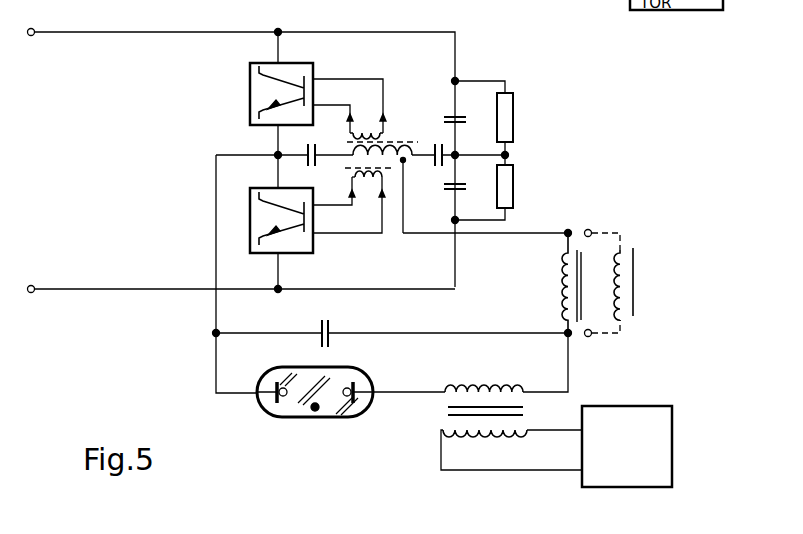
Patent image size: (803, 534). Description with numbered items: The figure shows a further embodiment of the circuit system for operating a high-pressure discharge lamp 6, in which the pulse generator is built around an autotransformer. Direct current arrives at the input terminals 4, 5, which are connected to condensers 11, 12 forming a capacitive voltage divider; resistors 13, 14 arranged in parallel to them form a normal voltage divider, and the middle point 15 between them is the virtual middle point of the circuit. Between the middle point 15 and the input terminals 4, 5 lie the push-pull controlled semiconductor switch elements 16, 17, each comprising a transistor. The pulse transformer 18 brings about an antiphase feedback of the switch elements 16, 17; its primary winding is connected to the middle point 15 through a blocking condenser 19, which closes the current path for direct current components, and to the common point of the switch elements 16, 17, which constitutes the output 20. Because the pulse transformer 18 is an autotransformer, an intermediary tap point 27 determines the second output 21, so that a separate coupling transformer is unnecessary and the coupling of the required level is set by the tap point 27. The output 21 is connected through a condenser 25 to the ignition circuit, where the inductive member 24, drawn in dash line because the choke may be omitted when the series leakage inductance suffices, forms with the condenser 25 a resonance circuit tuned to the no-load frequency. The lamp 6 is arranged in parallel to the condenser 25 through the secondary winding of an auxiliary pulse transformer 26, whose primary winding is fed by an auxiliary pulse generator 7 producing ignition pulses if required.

The input terminal 4 is at (31, 18).
The input terminal 5 is at (31, 278).
The high-pressure discharge lamp 6 is at (307, 378).
The auxiliary pulse generator 7 is at (625, 424).
The condenser 11 is at (468, 118).
The condenser 12 is at (466, 190).
The resistor 13 is at (510, 106).
The resistor 14 is at (512, 196).
The middle point 15 is at (515, 155).
The semiconductor switch element 16 is at (313, 66).
The semiconductor switch element 17 is at (305, 248).
The pulse transformer 18 is at (393, 130).
The blocking condenser 19 is at (309, 142).
The output 20 is at (214, 333).
The output 21 is at (573, 231).
The inductive member 24 is at (557, 283).
The condenser 25 is at (330, 318).
The auxiliary pulse transformer 26 is at (437, 415).
The intermediary tap point 27 is at (408, 162).